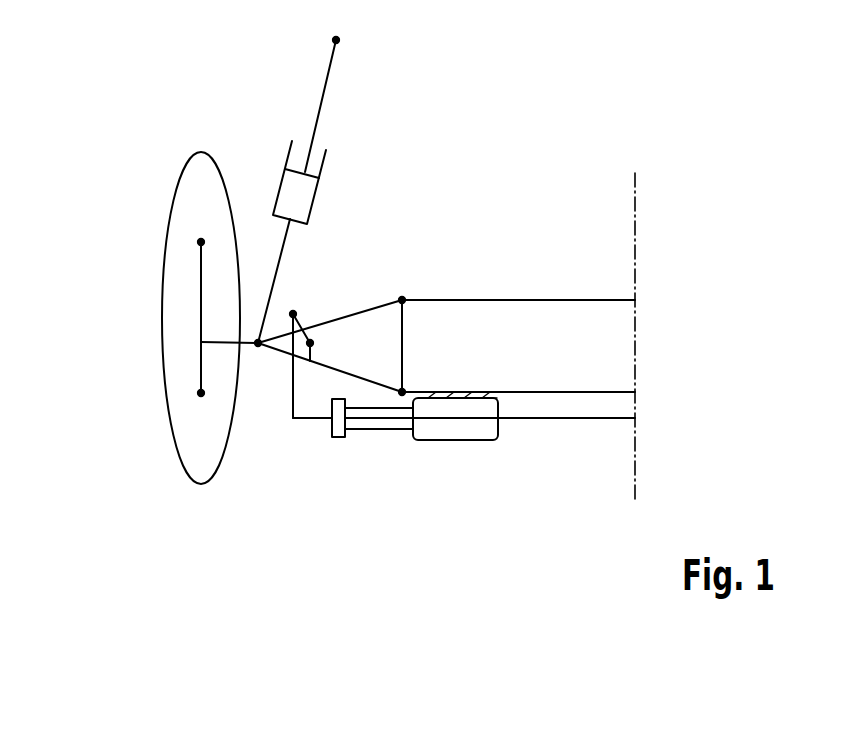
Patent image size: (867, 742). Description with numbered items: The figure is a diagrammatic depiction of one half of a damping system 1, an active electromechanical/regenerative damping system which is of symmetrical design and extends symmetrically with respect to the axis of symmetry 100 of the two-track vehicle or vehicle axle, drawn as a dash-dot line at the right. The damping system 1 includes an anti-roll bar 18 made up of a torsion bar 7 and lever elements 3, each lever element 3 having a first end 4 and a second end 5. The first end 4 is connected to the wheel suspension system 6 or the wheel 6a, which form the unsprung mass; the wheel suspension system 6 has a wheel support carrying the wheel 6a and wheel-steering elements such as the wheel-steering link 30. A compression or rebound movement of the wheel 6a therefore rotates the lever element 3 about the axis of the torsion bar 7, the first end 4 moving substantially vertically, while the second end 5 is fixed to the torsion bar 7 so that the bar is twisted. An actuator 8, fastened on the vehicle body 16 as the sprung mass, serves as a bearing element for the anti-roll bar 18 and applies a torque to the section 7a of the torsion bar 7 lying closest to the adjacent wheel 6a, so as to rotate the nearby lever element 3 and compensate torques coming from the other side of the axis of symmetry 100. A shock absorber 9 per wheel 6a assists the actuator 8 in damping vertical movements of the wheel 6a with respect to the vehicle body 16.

The damping system 1 is at (358, 499).
The lever element 3 is at (289, 386).
The first end 4 is at (306, 302).
The second end 5 is at (295, 436).
The wheel suspension system 6 is at (156, 186).
The wheel 6a is at (187, 433).
The torsion bar 7 is at (583, 420).
The section of the torsion bar 7a is at (320, 420).
The actuator 8 is at (455, 441).
The shock absorber 9 is at (305, 188).
The vehicle body 16 is at (338, 39).
The anti-roll bar 18 is at (516, 499).
The wheel-steering link 30 is at (324, 342).
The axis of symmetry 100 is at (637, 214).